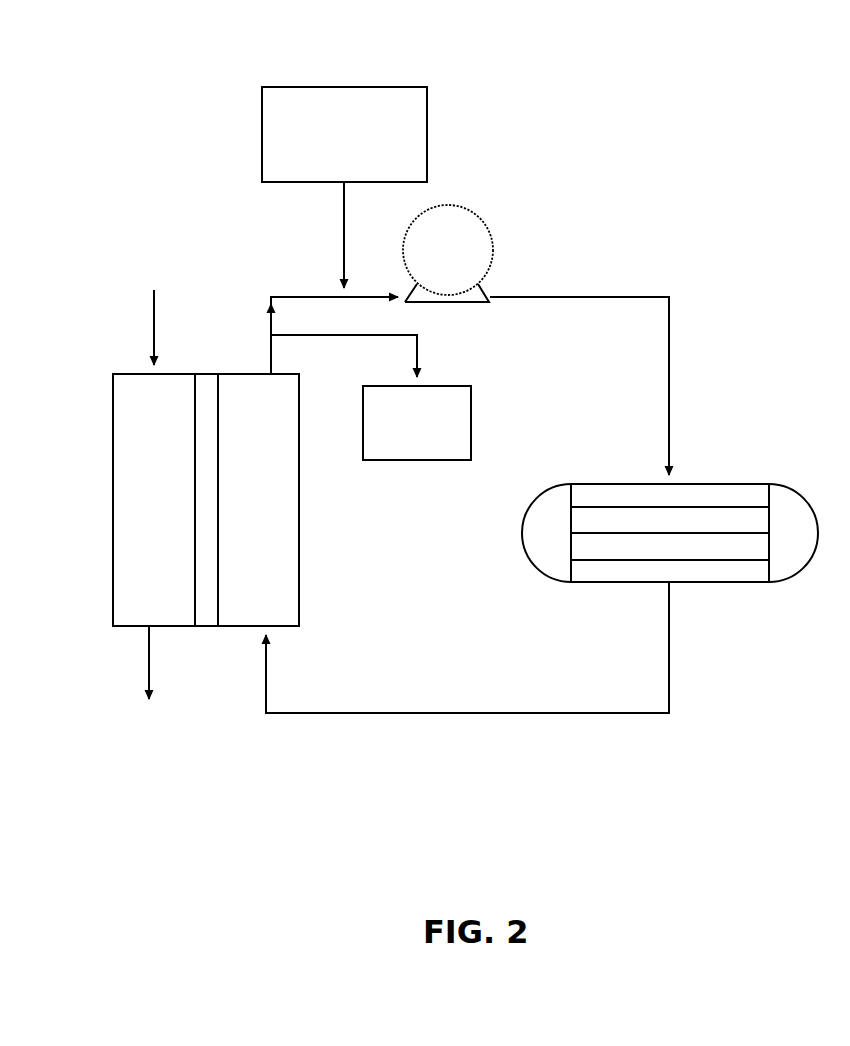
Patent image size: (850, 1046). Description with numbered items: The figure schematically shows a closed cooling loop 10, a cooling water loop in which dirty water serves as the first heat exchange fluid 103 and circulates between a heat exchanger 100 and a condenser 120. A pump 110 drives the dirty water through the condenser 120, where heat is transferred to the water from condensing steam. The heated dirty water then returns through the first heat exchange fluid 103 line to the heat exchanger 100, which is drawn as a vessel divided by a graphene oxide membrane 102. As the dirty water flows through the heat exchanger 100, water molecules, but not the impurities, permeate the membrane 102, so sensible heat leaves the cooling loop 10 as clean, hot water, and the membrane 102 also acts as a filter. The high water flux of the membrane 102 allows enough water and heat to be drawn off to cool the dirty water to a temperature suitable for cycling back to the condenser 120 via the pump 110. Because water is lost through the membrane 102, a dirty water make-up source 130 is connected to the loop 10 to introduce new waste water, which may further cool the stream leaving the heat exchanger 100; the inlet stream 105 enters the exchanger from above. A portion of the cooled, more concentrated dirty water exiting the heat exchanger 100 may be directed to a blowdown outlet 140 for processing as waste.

The closed cooling loop 10 is at (182, 92).
The heat exchanger 100 is at (113, 493).
The graphene oxide membrane 102 is at (206, 374).
The first heat exchange fluid 103 is at (467, 713).
The inlet 105 is at (154, 323).
The pump 110 is at (448, 205).
The condenser 120 is at (745, 484).
The dirty water make-up source 130 is at (333, 87).
The blowdown outlet 140 is at (471, 423).